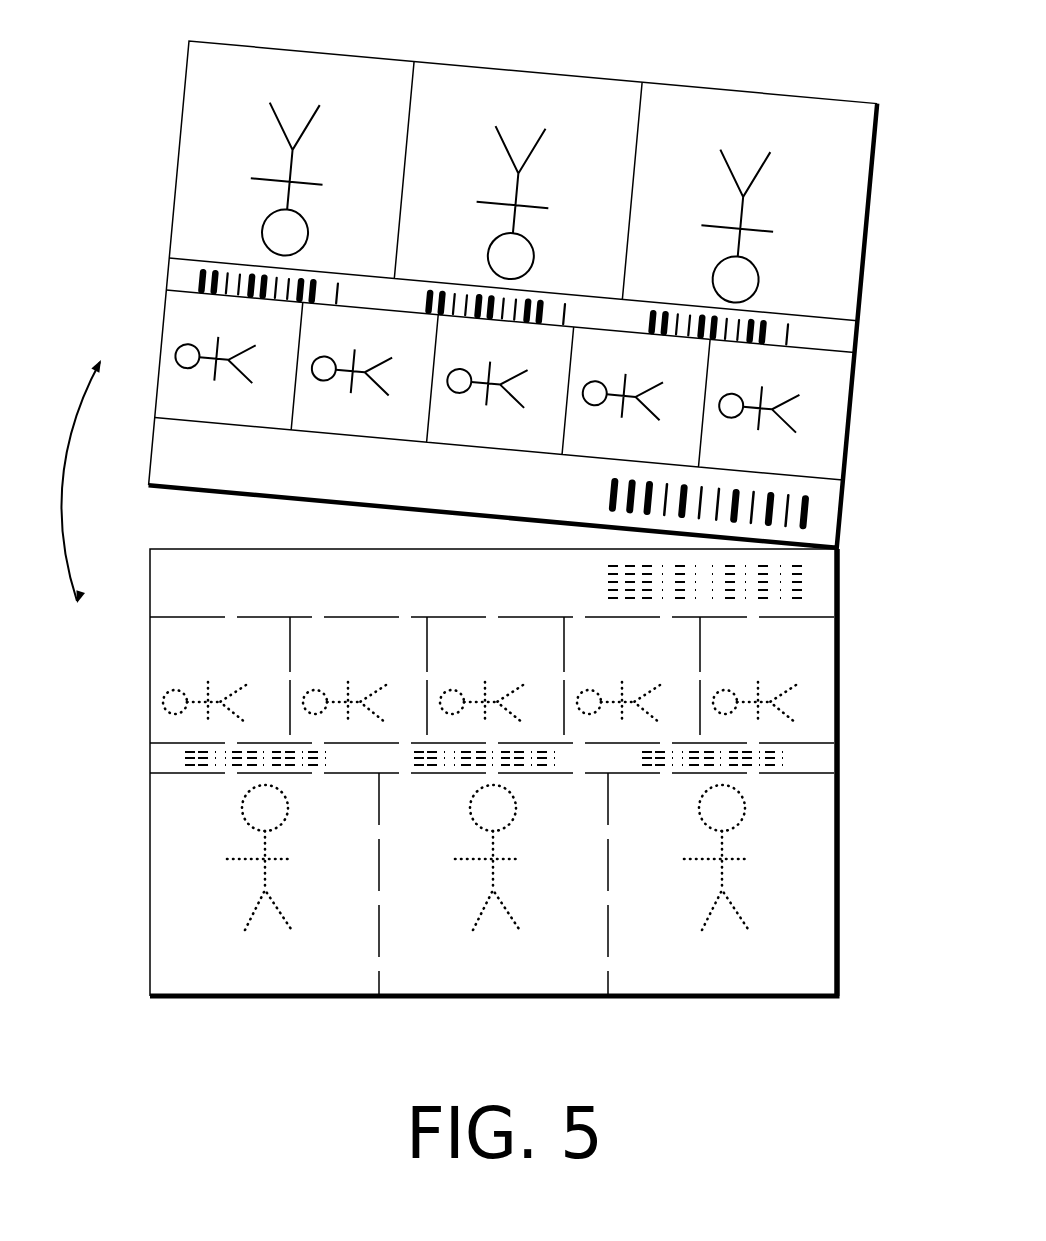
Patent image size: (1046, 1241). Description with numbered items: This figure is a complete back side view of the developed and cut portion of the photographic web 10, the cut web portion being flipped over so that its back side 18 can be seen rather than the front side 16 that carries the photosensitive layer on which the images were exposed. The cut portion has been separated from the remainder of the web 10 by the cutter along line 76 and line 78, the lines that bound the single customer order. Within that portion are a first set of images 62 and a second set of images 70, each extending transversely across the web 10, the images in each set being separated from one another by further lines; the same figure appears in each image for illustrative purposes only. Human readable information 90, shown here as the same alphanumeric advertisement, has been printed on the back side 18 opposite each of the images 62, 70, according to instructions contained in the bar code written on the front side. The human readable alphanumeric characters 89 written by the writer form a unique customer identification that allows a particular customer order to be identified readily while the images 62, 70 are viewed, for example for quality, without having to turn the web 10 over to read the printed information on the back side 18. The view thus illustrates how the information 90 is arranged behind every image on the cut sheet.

The web 10 is at (850, 824).
The front side 16 is at (684, 153).
The back side 18 is at (325, 978).
The first set of images 62 is at (840, 243).
The second set of images 70 is at (822, 418).
The line 76 is at (583, 78).
The line 78 is at (216, 549).
The human readable alphanumeric characters 89 is at (818, 588).
The human readable information 90 is at (370, 626).